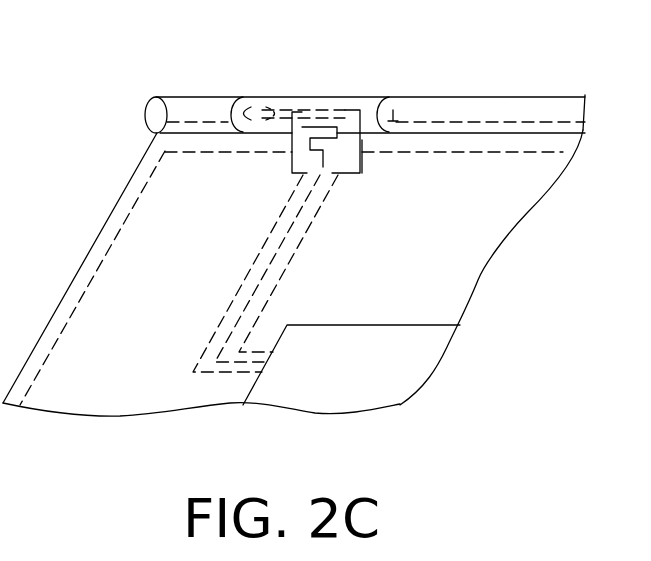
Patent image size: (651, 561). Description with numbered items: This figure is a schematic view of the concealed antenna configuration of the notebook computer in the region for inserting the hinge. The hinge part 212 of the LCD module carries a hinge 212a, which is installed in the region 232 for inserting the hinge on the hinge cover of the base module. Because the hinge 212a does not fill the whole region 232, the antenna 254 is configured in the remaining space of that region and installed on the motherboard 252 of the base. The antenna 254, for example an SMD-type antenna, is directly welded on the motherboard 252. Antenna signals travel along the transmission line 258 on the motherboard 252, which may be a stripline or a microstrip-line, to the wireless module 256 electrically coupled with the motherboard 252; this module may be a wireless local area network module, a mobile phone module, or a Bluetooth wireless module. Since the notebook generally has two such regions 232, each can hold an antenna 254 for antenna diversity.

The hinge part 212 is at (177, 108).
The hinge 212a is at (253, 108).
The region for inserting the hinge 232 is at (293, 96).
The motherboard 252 is at (108, 295).
The antenna 254 is at (338, 122).
The wireless module 256 is at (377, 325).
The transmission line 258 is at (318, 225).